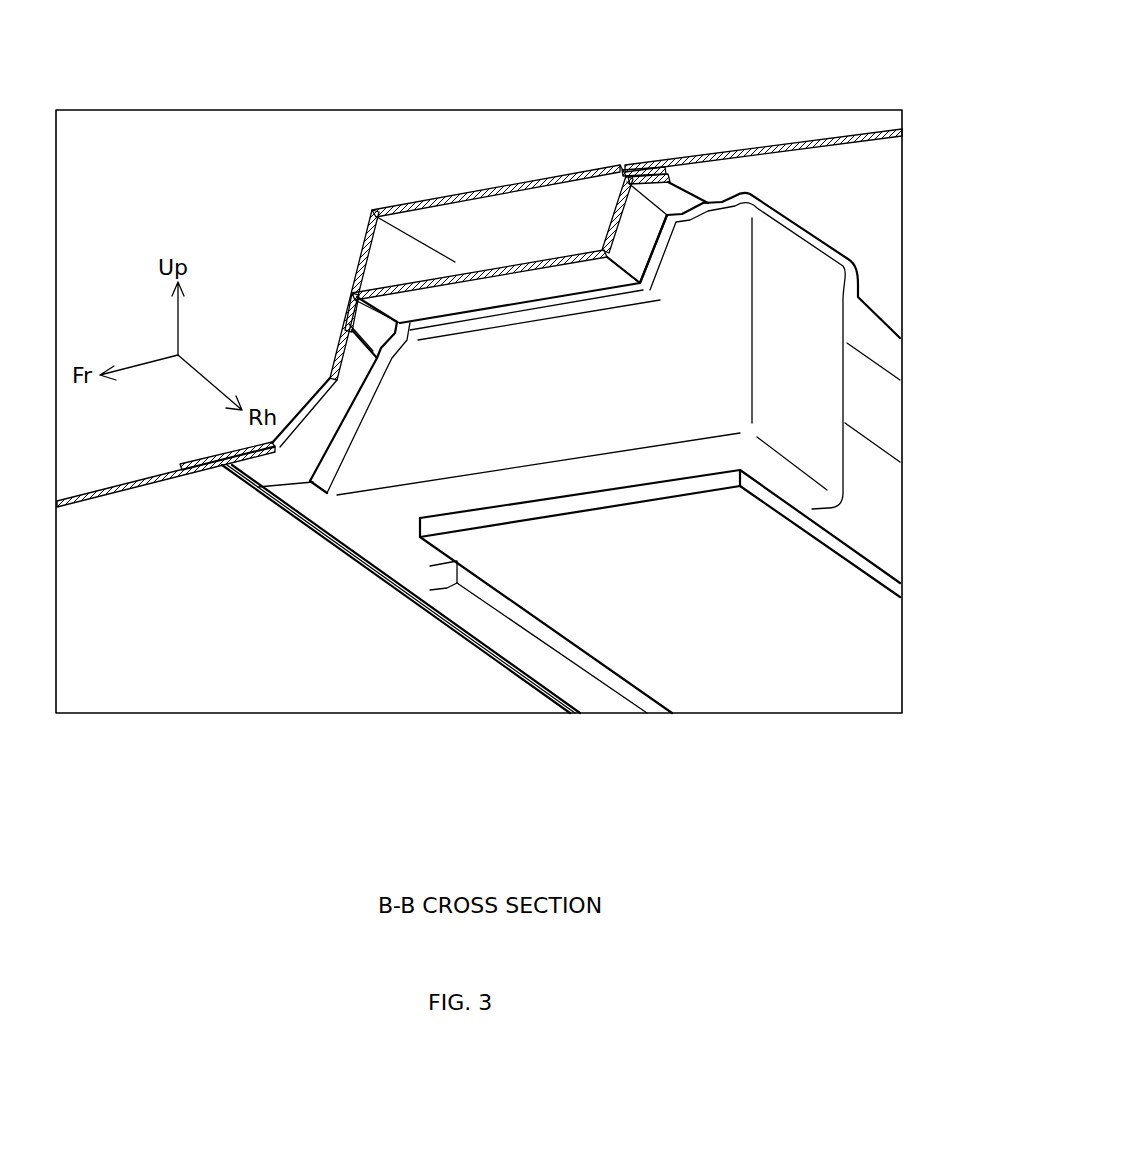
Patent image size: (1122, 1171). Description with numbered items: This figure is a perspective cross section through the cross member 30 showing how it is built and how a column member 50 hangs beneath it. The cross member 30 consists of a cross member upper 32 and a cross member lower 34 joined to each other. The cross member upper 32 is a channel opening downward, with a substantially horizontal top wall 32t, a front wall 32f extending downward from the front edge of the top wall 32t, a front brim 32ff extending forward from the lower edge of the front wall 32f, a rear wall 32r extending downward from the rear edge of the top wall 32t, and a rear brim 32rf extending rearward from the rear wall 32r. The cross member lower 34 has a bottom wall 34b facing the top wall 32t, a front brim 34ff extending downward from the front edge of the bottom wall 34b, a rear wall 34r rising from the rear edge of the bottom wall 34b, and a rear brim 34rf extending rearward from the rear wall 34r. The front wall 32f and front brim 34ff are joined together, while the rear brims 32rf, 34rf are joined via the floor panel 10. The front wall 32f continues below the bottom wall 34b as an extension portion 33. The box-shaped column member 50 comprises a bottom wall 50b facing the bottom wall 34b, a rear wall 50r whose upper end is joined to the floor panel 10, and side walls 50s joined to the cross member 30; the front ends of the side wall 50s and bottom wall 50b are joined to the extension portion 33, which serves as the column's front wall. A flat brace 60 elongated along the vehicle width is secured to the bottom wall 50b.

The floor panel 10 is at (118, 483).
The cross member 30 is at (390, 44).
The cross member upper 32 is at (427, 249).
The top wall 32t is at (520, 182).
The front wall 32f is at (360, 245).
The front brim 32ff is at (207, 461).
The rear wall 32r is at (625, 165).
The rear brim 32rf is at (647, 165).
The extension portion 33 is at (322, 378).
The cross member lower 34 is at (510, 261).
The bottom wall 34b is at (455, 265).
The front brim 34ff is at (363, 320).
The rear wall 34r is at (690, 235).
The rear brim 34rf is at (727, 217).
The column member 50 is at (607, 496).
The side wall 50s is at (453, 362).
The rear wall 50r is at (815, 343).
The bottom wall 50b is at (448, 495).
The brace 60 is at (725, 632).